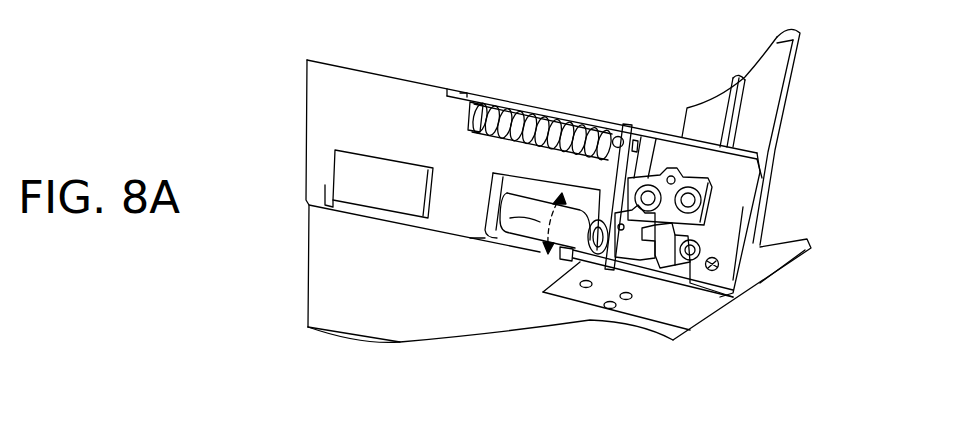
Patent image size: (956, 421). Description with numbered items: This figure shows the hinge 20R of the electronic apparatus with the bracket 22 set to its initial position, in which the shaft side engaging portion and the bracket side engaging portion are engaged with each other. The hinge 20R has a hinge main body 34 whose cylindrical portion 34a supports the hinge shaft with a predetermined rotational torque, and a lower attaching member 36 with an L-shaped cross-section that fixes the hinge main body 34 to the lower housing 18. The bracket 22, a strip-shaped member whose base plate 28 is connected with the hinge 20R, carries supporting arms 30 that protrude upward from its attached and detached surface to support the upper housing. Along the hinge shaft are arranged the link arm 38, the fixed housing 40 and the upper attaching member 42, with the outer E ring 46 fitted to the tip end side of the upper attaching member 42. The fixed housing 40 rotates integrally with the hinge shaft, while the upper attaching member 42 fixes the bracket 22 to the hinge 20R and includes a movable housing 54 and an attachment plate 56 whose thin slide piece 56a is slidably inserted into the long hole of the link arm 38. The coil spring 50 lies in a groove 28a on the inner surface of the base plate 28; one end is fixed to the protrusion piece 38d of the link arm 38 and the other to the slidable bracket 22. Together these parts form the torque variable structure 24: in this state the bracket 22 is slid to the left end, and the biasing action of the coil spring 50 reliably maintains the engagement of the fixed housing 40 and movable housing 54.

The base plate 28 is at (330, 78).
The bracket 22 is at (412, 82).
The groove 28a is at (470, 118).
The coil spring 50 is at (532, 105).
The link arm 38 is at (612, 169).
The protrusion piece 38d is at (615, 133).
The attachment plate 56 is at (652, 125).
The slide piece 56a is at (557, 265).
The hinge main body 34 is at (528, 228).
The cylindrical portion 34a is at (485, 240).
The supporting arm 30 is at (778, 62).
The torque variable structure 24 is at (712, 165).
The upper attaching member 42 is at (712, 188).
The outer E ring 46 is at (697, 288).
The movable housing 54 is at (645, 273).
The fixed housing 40 is at (597, 255).
The lower attaching member 36 is at (575, 293).
The hinge 20R is at (723, 240).
The lower housing 18 is at (400, 312).